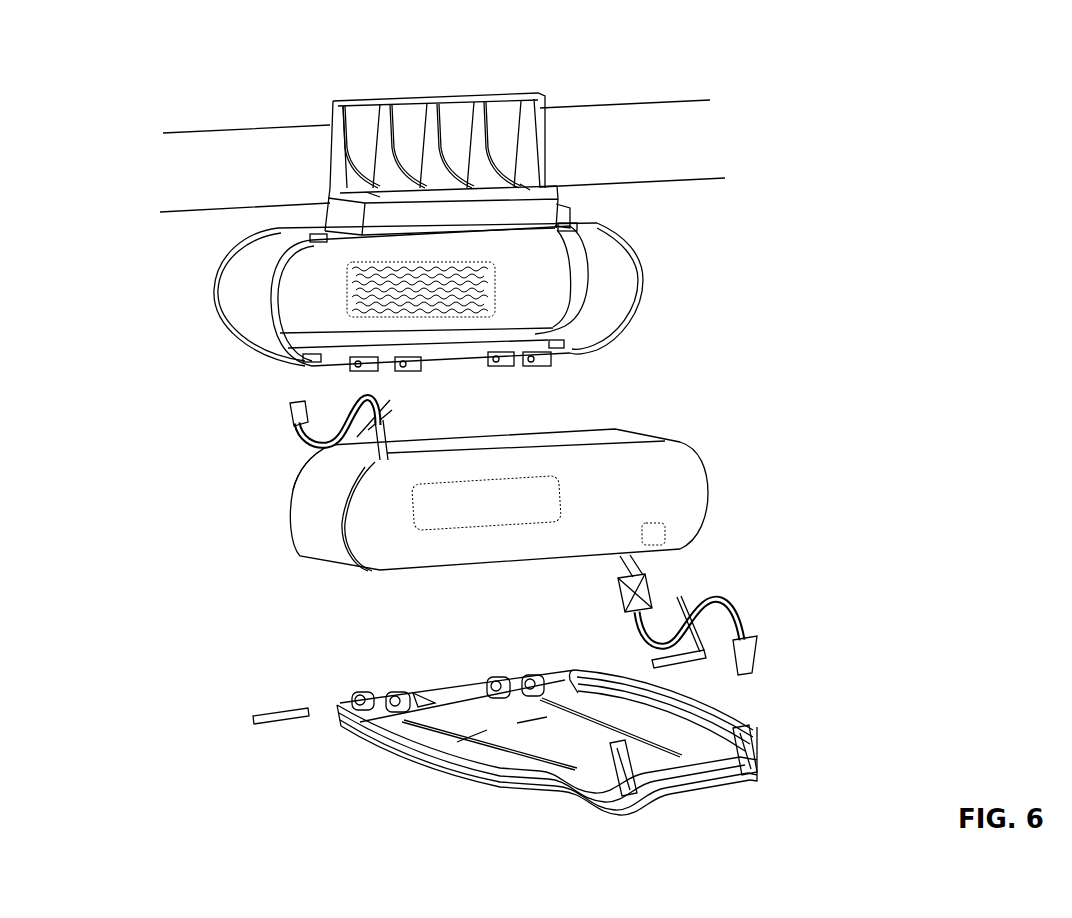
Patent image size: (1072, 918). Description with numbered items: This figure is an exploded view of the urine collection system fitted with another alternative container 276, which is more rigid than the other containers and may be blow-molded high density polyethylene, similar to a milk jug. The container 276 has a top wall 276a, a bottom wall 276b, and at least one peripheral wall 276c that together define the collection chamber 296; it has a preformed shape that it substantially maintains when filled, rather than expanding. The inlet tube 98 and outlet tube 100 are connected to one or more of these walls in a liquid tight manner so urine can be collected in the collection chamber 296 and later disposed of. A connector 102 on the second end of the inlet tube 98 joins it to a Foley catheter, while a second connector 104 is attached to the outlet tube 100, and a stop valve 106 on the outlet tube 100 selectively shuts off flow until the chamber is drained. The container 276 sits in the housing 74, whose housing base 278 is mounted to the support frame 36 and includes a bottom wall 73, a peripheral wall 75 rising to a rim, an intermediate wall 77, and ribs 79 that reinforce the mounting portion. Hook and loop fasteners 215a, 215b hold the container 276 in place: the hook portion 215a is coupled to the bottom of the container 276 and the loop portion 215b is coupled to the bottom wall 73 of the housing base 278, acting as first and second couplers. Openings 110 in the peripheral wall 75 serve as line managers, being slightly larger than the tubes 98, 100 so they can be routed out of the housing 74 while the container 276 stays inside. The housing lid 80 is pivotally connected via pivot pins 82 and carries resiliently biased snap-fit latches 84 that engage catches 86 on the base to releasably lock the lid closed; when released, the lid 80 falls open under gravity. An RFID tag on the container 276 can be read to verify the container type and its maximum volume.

The support frame 36 is at (633, 105).
The housing 74 is at (987, 143).
The bottom wall 73 is at (310, 277).
The peripheral wall 75 is at (228, 290).
The intermediate wall 77 is at (468, 217).
The ribs 79 is at (541, 92).
The housing lid 80 is at (803, 697).
The pivot pins 82 is at (698, 661).
The snap-fit latches 84 is at (730, 740).
The catches 86 is at (370, 195).
The inlet tube 98 is at (390, 420).
The outlet tube 100 is at (718, 602).
The connector 102 is at (289, 410).
The second connector 104 is at (752, 648).
The stop valve 106 is at (650, 592).
The openings 110 is at (318, 236).
The hook portion 215a is at (562, 503).
The loop portion 215b is at (493, 270).
The container 276 is at (682, 407).
The top wall 276a is at (390, 543).
The bottom wall 276b is at (296, 476).
The peripheral wall 276c is at (303, 532).
The housing base 278 is at (765, 185).
The collection chamber 296 is at (520, 525).
The radio frequency identification tag RFID is at (668, 523).